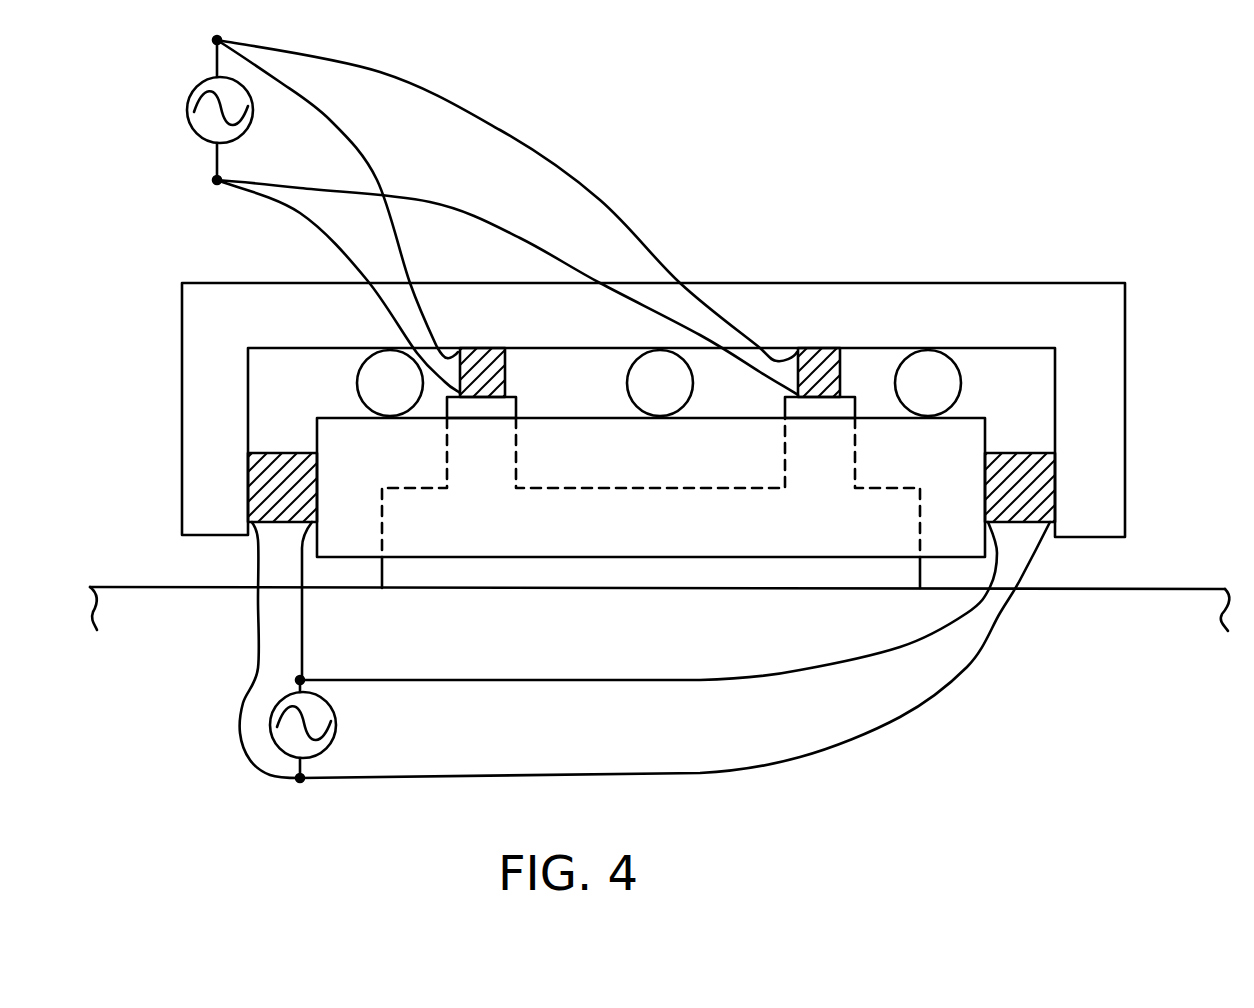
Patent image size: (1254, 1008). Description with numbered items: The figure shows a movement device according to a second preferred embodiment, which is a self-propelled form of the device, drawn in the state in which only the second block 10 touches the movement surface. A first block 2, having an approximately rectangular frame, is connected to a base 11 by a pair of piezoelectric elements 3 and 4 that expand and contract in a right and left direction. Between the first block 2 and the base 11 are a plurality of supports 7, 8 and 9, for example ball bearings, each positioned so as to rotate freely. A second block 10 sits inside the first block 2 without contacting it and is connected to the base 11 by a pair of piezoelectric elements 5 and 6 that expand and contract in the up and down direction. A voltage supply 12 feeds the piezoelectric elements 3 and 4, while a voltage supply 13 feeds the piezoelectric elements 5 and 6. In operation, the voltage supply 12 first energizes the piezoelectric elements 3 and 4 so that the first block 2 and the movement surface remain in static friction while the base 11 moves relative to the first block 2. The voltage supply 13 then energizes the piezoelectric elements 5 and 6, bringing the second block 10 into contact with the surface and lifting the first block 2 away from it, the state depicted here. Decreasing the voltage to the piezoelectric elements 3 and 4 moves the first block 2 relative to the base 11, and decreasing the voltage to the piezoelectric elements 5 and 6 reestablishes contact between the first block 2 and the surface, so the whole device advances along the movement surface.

The first block 2 is at (343, 543).
The piezoelectric element 3 is at (1020, 467).
The piezoelectric element 4 is at (280, 458).
The piezoelectric element 5 is at (830, 378).
The piezoelectric element 6 is at (510, 382).
The support 7 is at (932, 370).
The support 8 is at (628, 365).
The support 9 is at (386, 365).
The second block 10 is at (507, 575).
The base 11 is at (182, 416).
The voltage supply 12 is at (338, 727).
The voltage supply 13 is at (189, 107).